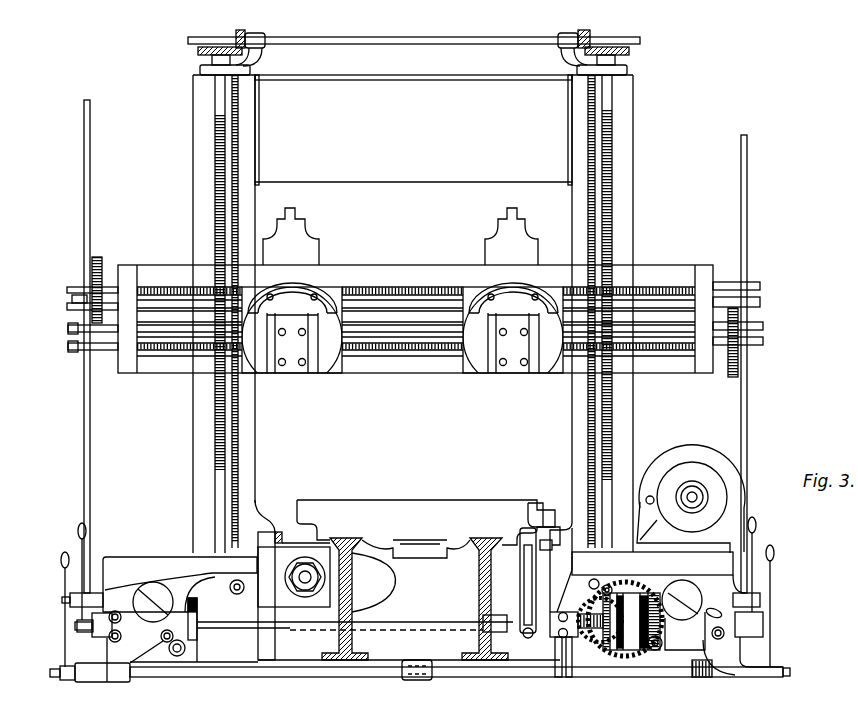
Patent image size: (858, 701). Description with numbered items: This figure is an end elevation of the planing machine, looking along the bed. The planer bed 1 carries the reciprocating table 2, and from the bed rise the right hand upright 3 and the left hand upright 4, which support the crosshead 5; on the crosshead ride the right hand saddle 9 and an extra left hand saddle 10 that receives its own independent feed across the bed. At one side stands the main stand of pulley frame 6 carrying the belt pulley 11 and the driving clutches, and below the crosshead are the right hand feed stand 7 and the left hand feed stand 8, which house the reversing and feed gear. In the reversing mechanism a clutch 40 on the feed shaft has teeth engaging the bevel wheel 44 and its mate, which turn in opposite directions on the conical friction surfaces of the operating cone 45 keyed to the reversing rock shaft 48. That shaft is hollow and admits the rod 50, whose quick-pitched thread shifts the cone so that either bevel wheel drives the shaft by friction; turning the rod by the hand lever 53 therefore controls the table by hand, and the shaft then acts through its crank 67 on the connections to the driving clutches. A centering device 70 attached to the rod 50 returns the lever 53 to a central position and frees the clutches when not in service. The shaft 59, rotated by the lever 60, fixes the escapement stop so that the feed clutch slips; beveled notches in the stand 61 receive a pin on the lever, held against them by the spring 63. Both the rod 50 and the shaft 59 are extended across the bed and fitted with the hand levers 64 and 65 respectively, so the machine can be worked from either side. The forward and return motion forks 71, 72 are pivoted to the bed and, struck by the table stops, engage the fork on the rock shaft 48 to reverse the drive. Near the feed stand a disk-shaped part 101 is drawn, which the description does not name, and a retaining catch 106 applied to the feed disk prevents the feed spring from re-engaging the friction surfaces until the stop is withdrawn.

The planer bed 1 is at (415, 599).
The table 2 is at (413, 367).
The right hand upright 3 is at (602, 313).
The left hand upright 4 is at (224, 314).
The crosshead 5 is at (415, 319).
The main stand of pulley frame 6 is at (683, 507).
The right hand feed stand 7 is at (658, 572).
The left hand feed stand 8 is at (180, 610).
The right hand saddle 9 is at (513, 335).
The left hand saddle 10 is at (292, 335).
The belt pulley 11 is at (700, 453).
The clutch 40 is at (533, 618).
The bevel wheel 44 is at (600, 610).
The operating cone 45 is at (641, 594).
The reversing rock shaft 48 is at (554, 634).
The rod 50 is at (355, 623).
The hand lever 53 is at (757, 527).
The shaft 59 is at (456, 673).
The lever 60 is at (775, 555).
The stand 61 is at (723, 639).
The spring 63 is at (702, 678).
The hand lever 64 is at (78, 531).
The hand lever 65 is at (61, 560).
The crank 67 is at (663, 647).
The centering device 70 is at (204, 619).
The forward motion fork 71 is at (519, 594).
The return motion fork 72 is at (548, 549).
The cam disk 101 is at (698, 627).
The retaining catch 106 is at (713, 607).